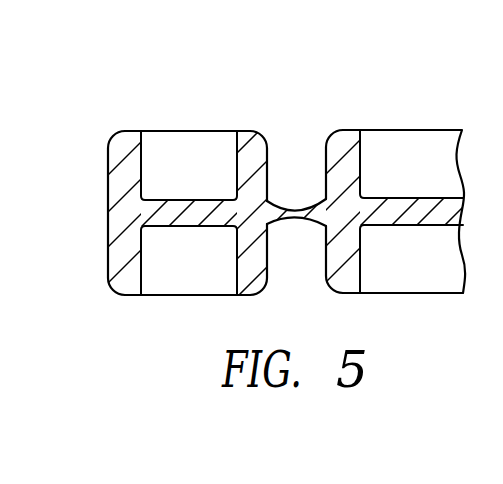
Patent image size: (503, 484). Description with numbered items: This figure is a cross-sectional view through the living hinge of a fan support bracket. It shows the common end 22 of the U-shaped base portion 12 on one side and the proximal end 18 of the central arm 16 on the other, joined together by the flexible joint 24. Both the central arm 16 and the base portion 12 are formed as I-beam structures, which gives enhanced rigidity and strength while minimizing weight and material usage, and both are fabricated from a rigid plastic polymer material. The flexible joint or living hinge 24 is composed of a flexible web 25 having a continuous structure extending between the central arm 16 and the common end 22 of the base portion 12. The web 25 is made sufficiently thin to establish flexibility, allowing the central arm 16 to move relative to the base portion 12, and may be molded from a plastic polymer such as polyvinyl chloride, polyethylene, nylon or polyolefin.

The base portion 12 is at (110, 265).
The central arm 16 is at (431, 128).
The proximal end 18 is at (334, 113).
The common end 22 is at (108, 190).
The flexible joint 24 is at (300, 196).
The flexible web 25 is at (302, 224).